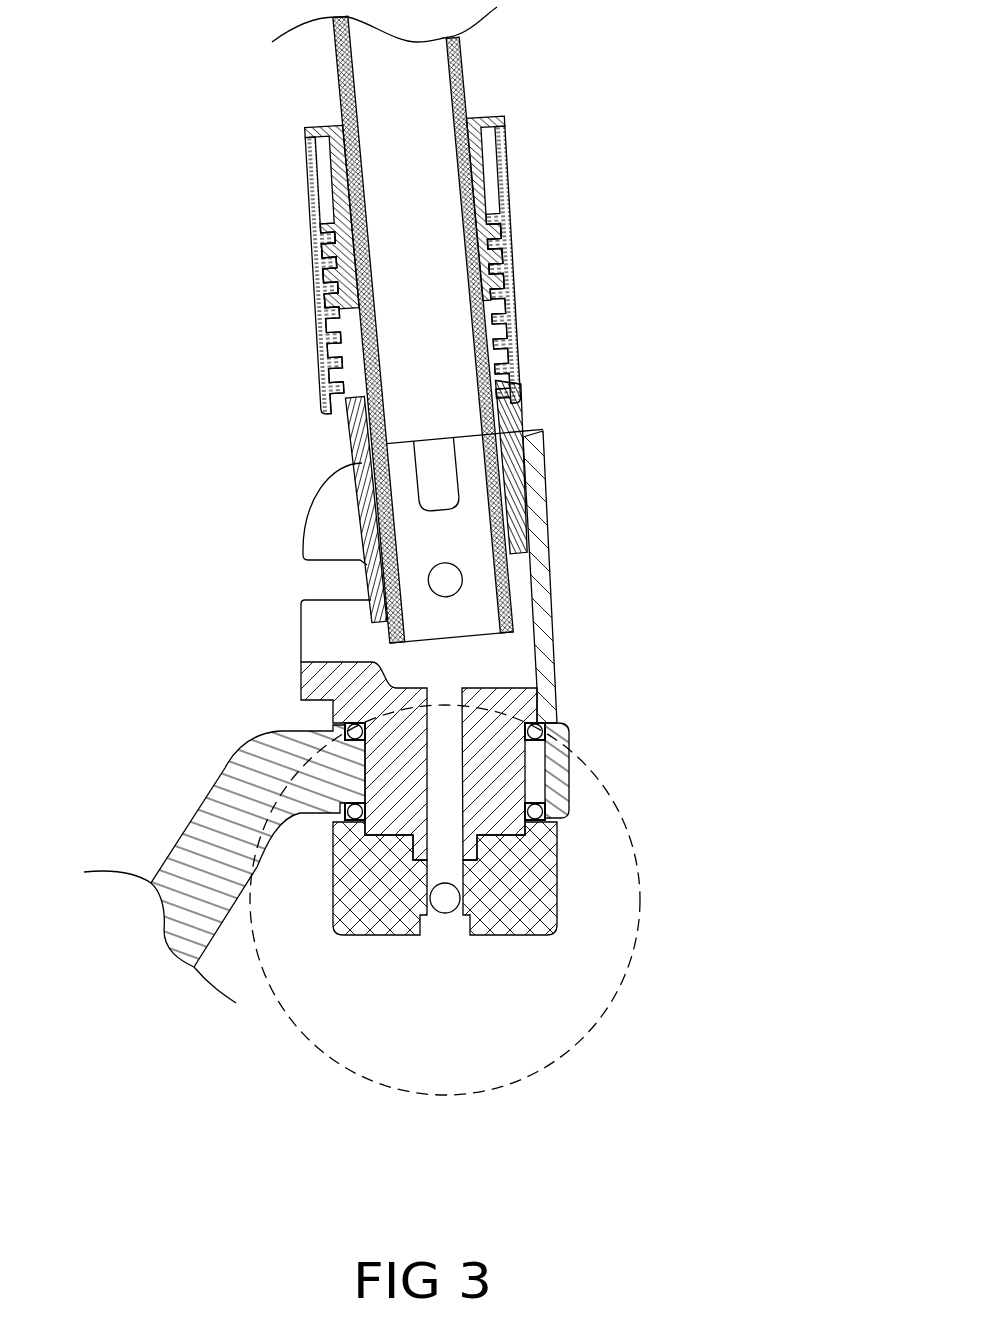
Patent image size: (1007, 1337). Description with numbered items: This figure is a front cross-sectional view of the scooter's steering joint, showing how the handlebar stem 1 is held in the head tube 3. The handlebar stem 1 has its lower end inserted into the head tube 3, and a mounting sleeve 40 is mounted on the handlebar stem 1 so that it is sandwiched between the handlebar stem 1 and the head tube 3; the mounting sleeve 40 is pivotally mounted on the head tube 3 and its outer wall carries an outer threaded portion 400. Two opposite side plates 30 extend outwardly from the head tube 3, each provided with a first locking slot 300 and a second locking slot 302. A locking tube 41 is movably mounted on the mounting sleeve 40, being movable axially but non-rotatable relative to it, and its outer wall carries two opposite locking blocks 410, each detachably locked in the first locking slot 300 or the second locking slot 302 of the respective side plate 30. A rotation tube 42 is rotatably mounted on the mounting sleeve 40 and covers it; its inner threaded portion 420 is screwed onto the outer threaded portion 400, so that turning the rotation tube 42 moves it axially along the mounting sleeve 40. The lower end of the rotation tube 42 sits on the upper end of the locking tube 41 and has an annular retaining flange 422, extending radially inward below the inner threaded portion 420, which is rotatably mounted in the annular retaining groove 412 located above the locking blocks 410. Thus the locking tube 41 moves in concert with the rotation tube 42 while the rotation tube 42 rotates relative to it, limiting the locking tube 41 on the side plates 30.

The handlebar stem 1 is at (417, 87).
The mounting sleeve 40 is at (477, 160).
The outer threaded portion 400 is at (500, 248).
The rotation tube 42 is at (500, 297).
The inner threaded portion 420 is at (508, 315).
The annular retaining flange 422 is at (522, 393).
The locking tube 41 is at (512, 417).
The annular retaining groove 412 is at (482, 395).
The locking block 410 is at (430, 475).
The side plate 30 is at (332, 505).
The first locking slot 300 is at (437, 513).
The second locking slot 302 is at (327, 577).
The head tube 3 is at (540, 582).